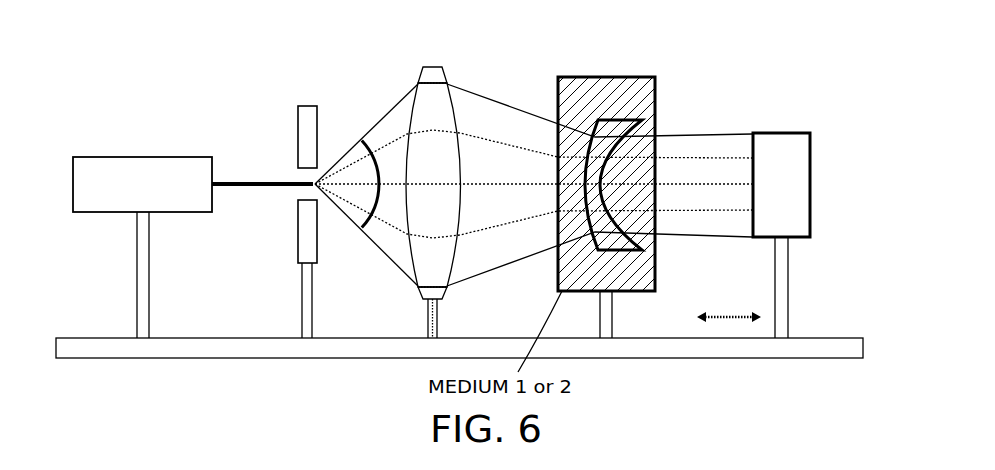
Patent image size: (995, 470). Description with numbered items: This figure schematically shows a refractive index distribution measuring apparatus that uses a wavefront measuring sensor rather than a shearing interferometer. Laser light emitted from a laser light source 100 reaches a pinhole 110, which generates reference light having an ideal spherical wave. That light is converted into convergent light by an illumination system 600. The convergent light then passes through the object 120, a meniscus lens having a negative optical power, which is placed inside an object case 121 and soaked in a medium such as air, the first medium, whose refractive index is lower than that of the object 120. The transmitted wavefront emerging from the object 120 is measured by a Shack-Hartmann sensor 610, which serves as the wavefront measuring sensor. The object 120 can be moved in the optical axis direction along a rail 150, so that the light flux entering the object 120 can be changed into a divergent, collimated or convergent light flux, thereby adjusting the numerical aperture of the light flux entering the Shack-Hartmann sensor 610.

The laser light source 100 is at (193, 232).
The pinhole 110 is at (308, 206).
The illumination system 600 is at (433, 184).
The object case 121 is at (558, 77).
The object 120 is at (609, 120).
The Shack-Hartmann sensor 610 is at (783, 224).
The rail 150 is at (460, 334).